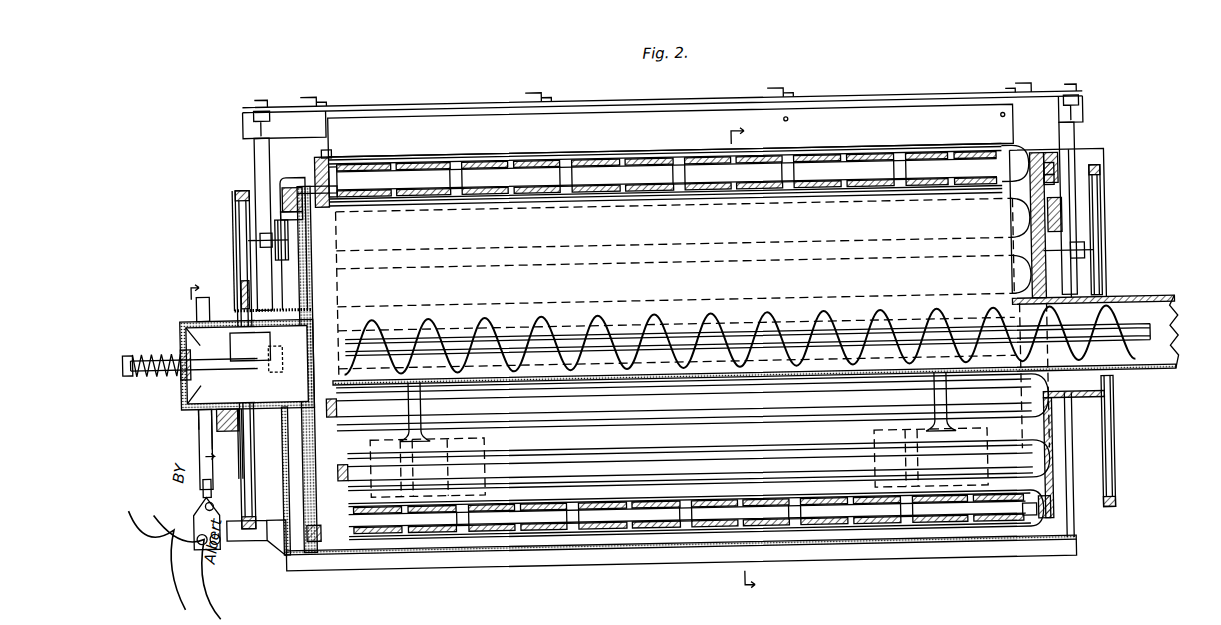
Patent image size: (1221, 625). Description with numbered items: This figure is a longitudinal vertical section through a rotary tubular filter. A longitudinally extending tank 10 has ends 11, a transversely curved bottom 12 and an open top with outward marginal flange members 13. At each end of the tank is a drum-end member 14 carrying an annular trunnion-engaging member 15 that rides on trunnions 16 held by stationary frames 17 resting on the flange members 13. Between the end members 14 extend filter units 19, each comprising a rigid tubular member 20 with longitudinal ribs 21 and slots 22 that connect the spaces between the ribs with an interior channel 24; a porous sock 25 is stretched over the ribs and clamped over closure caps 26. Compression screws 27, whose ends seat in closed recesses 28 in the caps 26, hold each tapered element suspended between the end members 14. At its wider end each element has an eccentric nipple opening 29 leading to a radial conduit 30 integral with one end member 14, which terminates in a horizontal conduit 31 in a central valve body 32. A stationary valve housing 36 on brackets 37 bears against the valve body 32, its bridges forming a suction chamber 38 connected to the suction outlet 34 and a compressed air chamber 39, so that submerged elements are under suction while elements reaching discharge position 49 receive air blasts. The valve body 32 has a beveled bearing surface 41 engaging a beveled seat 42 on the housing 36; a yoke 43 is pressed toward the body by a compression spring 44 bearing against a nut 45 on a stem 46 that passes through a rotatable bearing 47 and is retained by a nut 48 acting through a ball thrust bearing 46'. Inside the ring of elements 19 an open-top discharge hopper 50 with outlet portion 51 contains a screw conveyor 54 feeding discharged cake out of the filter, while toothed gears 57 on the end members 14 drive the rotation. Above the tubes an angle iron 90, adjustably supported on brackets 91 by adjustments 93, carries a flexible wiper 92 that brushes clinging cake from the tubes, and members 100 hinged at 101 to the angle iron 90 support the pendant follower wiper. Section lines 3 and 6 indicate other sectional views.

The section line 3- 3 is at (749, 360).
The section line 6- 6 is at (196, 373).
The tank 10 is at (842, 547).
The end 11 is at (300, 460).
The bottom 12 is at (700, 547).
The marginal flange member 13 is at (281, 412).
The drum-end member 14 is at (285, 185).
The trunnion-engaging member 15 is at (285, 205).
The trunnion 16 is at (278, 225).
The stationary frame 17 is at (250, 232).
The filter unit 19 is at (845, 168).
The tubular member 20 is at (498, 165).
The rib 21 is at (450, 160).
The slot 22 is at (400, 175).
The channel 24 is at (546, 165).
The sock 25 is at (556, 533).
The closure cap 26 is at (326, 143).
The compression screw 27 is at (300, 178).
The recess 28 is at (330, 152).
The nipple opening 29 is at (300, 182).
The radial conduit 30 is at (262, 300).
The horizontal conduit 31 is at (252, 282).
The central valve body 32 is at (228, 330).
The suction outlet 34 is at (197, 412).
The valve housing 36 is at (215, 404).
The bracket 37 is at (203, 490).
The suction chamber 38 is at (210, 415).
The compressed air chamber 39 is at (197, 302).
The beveled bearing surface 41 is at (237, 420).
The beveled seat 42 is at (210, 474).
The yoke 43 is at (186, 330).
The compression spring 44 is at (150, 342).
The nut 45 is at (126, 348).
The stem 46 is at (195, 378).
The ball thrust bearing 46' is at (157, 421).
The rotatable bearing 47 is at (182, 372).
The nut 48 is at (258, 355).
The discharge position 49 is at (340, 162).
The discharge hopper 50 is at (1012, 208).
The outlet portion 51 is at (1112, 318).
The screw conveyor 54 is at (1140, 318).
The toothed gear 57 is at (240, 246).
The angle iron 90 is at (250, 112).
The bracket 91 is at (265, 137).
The flexible wiper 92 is at (640, 107).
The adjustment 93 is at (265, 92).
The member 100 is at (313, 90).
The hinge 101 is at (327, 96).